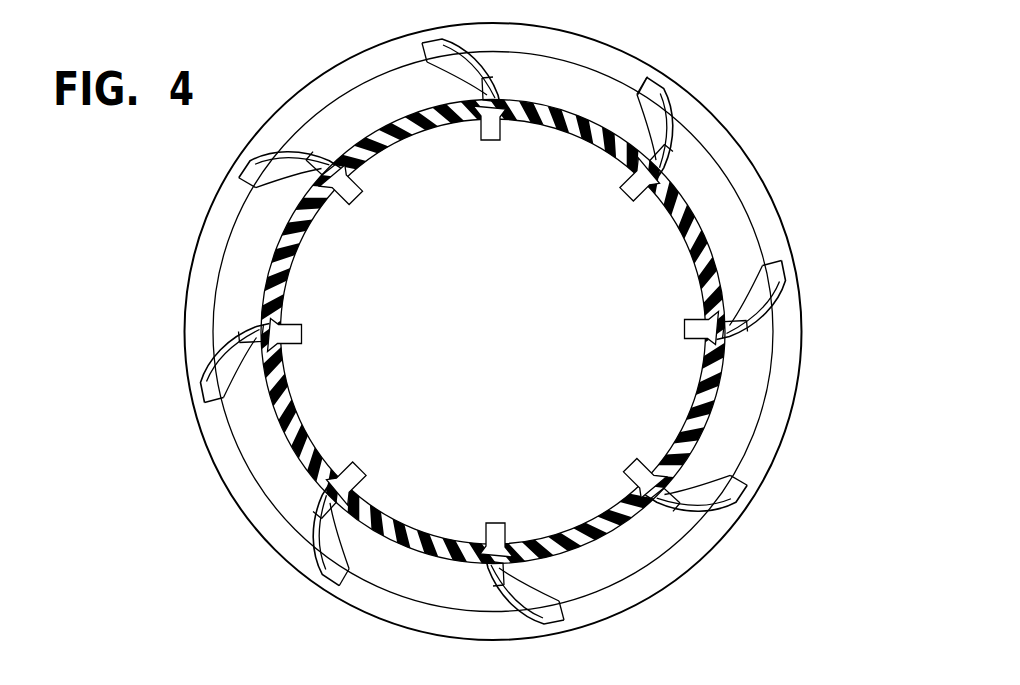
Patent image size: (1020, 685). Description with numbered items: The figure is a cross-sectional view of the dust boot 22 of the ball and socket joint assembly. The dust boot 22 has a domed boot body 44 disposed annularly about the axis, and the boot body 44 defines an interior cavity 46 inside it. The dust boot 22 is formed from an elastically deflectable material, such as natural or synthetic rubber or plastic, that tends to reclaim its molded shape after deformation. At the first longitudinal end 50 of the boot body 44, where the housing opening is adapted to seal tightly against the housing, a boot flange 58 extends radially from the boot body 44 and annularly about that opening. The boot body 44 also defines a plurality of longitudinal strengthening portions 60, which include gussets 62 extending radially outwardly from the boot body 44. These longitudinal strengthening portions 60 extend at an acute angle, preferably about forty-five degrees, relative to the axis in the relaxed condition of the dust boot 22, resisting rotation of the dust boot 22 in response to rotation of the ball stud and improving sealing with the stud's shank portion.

The dust boot 22 is at (528, 327).
The boot body 44 is at (493, 375).
The interior cavity 46 is at (678, 233).
The first longitudinal end 50 is at (767, 387).
The boot flange 58 is at (767, 445).
The longitudinal strengthening portions 60 is at (675, 105).
The gussets 62 is at (645, 78).